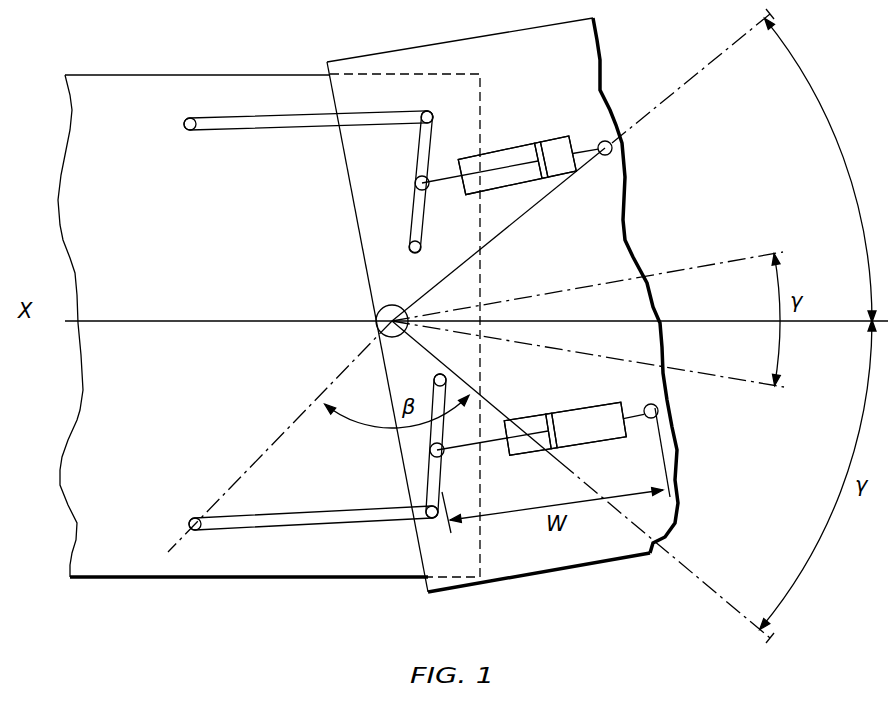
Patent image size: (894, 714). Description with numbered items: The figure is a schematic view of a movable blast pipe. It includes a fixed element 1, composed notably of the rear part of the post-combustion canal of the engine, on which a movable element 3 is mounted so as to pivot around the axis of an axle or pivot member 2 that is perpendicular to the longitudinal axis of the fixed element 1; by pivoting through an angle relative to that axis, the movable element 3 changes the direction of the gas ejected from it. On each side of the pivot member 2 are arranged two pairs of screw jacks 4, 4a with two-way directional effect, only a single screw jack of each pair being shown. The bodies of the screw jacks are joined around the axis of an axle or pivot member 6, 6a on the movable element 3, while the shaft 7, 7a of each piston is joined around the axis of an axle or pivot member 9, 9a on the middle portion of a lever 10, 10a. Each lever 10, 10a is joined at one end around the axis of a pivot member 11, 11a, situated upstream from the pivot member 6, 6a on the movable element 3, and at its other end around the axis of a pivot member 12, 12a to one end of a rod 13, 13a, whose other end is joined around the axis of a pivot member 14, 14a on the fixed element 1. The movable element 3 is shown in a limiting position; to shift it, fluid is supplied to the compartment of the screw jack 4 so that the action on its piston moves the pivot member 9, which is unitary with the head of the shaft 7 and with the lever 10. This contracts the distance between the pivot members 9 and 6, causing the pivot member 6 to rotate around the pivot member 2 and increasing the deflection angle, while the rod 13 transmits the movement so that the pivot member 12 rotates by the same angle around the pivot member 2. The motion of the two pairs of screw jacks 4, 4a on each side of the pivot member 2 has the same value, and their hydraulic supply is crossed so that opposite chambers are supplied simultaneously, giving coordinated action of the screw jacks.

The fixed element 1 is at (323, 580).
The pivot member 2 is at (388, 320).
The movable element 3 is at (600, 563).
The screw jack 4 is at (575, 443).
The screw jack 4a is at (529, 136).
The pivot member 6 is at (647, 406).
The pivot member 6a is at (612, 148).
The shaft of piston 7 is at (520, 446).
The shaft of piston 7a is at (505, 175).
The pivot member 9 is at (430, 450).
The pivot member 9a is at (416, 184).
The lever 10 is at (440, 427).
The lever 10a is at (415, 152).
The pivot member 11 is at (435, 379).
The pivot member 11a is at (409, 247).
The pivot member 12 is at (437, 516).
The pivot member 12a is at (432, 112).
The rod 13 is at (312, 512).
The rod 13a is at (300, 130).
The pivot member 14 is at (190, 524).
The pivot member 14a is at (191, 130).